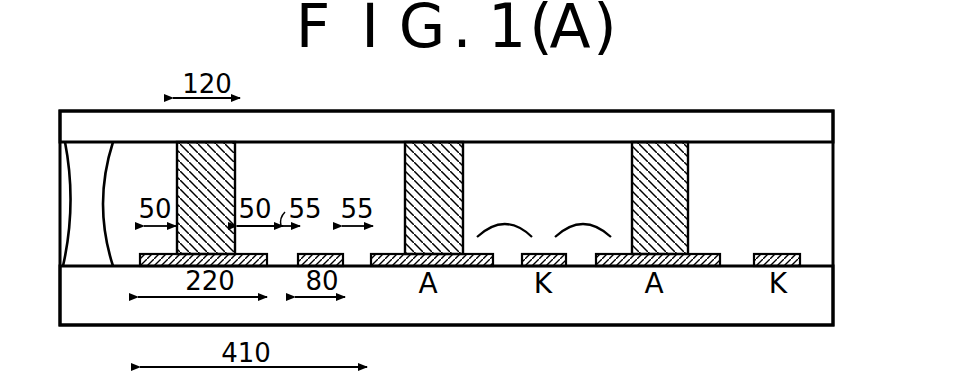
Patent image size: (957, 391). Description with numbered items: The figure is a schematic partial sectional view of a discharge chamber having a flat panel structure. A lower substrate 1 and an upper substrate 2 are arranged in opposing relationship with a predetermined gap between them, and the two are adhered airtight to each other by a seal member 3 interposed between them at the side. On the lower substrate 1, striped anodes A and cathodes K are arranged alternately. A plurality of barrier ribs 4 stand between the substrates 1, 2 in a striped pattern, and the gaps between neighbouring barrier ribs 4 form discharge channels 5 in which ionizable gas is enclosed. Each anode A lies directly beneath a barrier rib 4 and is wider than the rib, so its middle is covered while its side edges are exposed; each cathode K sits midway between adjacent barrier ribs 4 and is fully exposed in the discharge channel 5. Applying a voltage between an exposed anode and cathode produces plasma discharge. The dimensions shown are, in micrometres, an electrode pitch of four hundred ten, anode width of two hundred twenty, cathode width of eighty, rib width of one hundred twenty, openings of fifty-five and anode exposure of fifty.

The substrate 1 is at (738, 287).
The substrate 2 is at (283, 128).
The seal member 3 is at (90, 150).
The barrier rib 4 is at (433, 165).
The discharge channel 5 is at (512, 167).